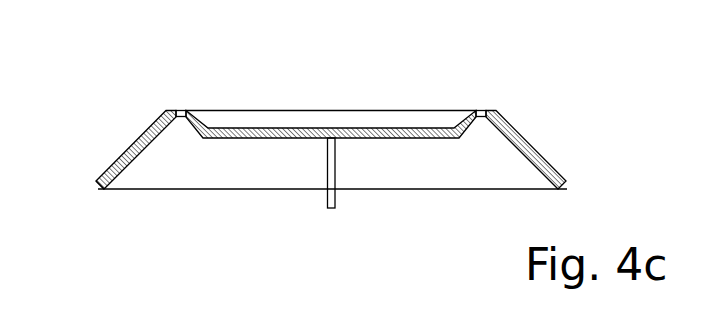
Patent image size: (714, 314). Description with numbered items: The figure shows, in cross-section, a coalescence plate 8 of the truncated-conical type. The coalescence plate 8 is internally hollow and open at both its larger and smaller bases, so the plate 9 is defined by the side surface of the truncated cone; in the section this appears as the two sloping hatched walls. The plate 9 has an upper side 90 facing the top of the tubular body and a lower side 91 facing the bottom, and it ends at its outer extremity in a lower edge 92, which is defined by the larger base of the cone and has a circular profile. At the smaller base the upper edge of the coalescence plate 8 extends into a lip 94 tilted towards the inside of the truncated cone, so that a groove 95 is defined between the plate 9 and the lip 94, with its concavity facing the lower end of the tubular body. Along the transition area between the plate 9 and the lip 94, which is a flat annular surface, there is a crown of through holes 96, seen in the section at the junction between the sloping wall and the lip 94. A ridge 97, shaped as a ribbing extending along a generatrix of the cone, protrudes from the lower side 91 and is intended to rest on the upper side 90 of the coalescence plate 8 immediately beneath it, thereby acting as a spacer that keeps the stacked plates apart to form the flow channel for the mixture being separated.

The coalescence plate 8 is at (430, 85).
The plate 9 is at (553, 153).
The upper side 90 is at (113, 150).
The lower side 91 is at (147, 169).
The lower edge 92 is at (97, 188).
The lip 94 is at (320, 118).
The groove 95 is at (181, 117).
The through holes 96 is at (181, 110).
The ridge 97 is at (337, 205).